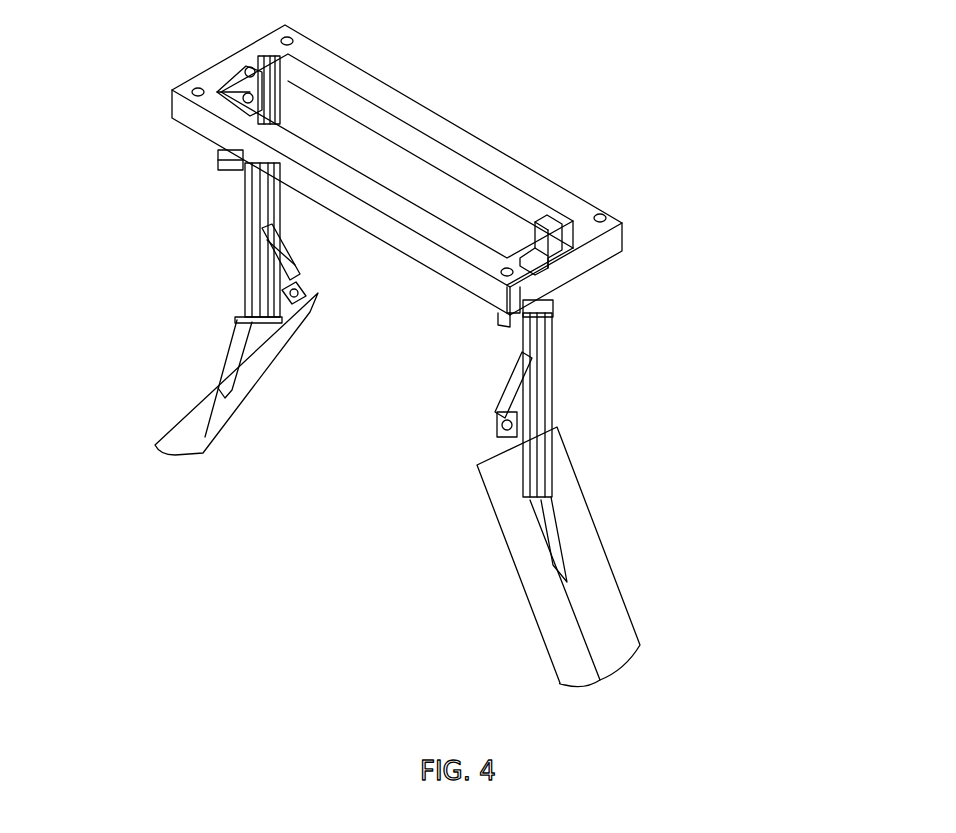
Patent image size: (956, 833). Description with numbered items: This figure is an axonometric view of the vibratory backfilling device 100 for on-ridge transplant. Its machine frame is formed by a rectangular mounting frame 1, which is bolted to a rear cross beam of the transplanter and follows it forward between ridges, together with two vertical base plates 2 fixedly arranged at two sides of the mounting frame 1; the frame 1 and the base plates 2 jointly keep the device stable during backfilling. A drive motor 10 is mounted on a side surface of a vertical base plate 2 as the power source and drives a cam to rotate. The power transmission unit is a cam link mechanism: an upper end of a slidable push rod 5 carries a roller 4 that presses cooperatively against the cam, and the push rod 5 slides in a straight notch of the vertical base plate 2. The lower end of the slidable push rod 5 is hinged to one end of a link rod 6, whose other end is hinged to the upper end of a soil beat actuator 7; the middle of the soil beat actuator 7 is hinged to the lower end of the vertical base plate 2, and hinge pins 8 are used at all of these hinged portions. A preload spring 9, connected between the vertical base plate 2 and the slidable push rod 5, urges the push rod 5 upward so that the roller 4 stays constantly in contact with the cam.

The vibratory backfilling device 100 is at (466, 86).
The mounting frame 1 is at (557, 252).
The vertical base plate 2 is at (563, 445).
The roller 4 is at (550, 315).
The slidable push rod 5 is at (550, 340).
The link rod 6 is at (213, 315).
The soil beat actuator 7 is at (185, 374).
The hinge pin 8 is at (196, 189).
The preload spring 9 is at (205, 259).
The drive motor 10 is at (161, 142).